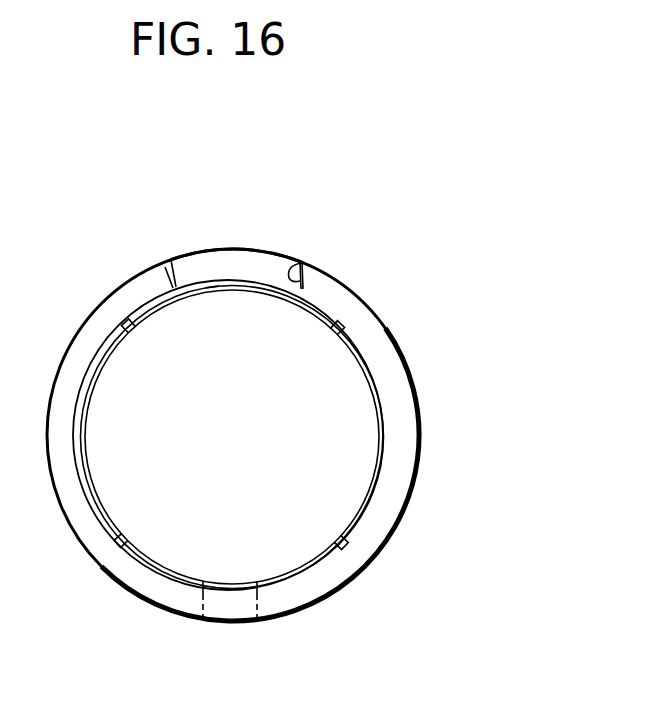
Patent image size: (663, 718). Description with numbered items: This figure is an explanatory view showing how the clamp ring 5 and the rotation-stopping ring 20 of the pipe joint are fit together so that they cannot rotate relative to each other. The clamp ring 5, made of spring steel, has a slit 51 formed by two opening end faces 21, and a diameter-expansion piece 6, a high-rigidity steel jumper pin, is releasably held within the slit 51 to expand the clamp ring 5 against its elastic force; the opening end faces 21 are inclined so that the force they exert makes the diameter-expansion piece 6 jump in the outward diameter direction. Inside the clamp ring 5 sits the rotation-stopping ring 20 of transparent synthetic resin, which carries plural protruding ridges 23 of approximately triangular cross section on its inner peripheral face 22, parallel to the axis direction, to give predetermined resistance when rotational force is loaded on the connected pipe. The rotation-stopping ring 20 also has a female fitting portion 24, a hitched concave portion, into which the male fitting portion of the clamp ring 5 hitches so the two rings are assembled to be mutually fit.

The clamp ring 5 is at (403, 432).
The diameter-expansion piece 6 is at (234, 272).
The rotation-stopping ring 20 is at (372, 475).
The opening end faces 21 is at (188, 262).
The inner peripheral face 22 is at (205, 293).
The protruding ridges 23 is at (140, 333).
The female fitting portion 24 is at (240, 584).
The slit 51 is at (297, 258).